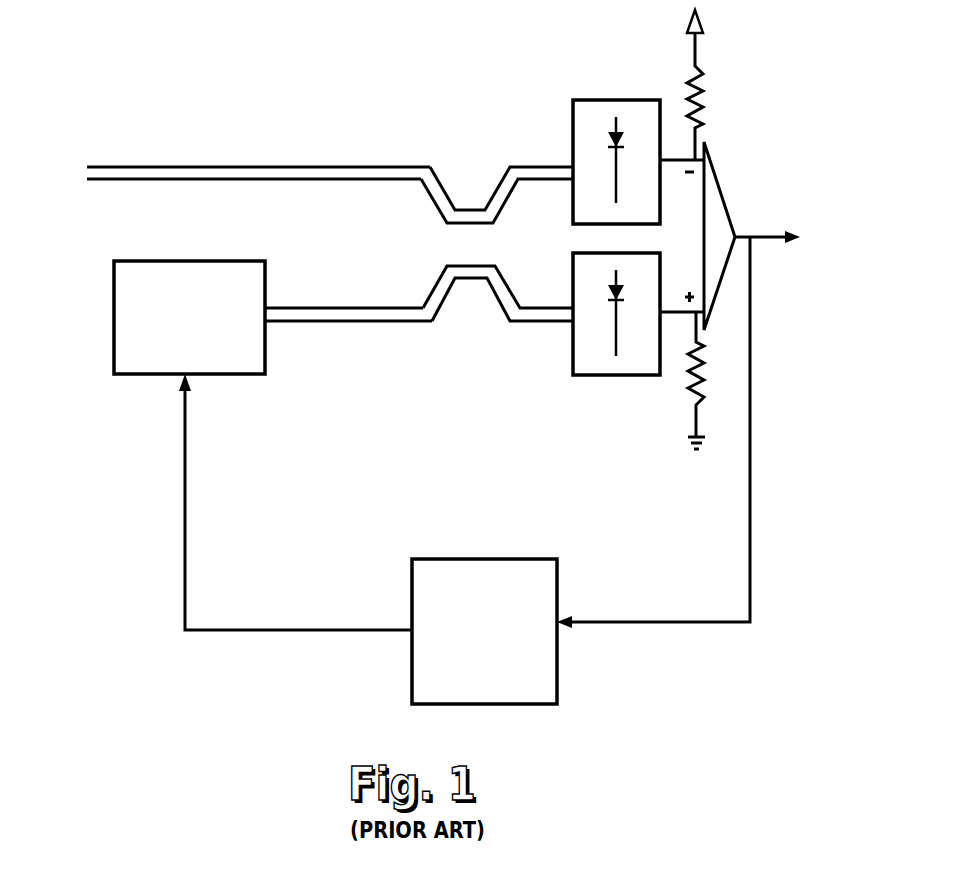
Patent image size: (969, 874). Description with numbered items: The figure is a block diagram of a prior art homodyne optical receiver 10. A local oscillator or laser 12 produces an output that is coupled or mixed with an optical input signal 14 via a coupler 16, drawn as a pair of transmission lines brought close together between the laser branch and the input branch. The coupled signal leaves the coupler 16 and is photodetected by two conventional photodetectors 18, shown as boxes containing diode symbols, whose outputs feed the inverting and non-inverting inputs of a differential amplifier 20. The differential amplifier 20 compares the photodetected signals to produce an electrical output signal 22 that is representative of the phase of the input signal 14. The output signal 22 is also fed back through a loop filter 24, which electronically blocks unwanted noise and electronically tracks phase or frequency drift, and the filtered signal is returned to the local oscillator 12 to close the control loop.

The prior art homodyne receiver 10 is at (212, 115).
The local oscillator or laser 12 is at (114, 298).
The optical input signal 14 is at (86, 172).
The coupler 16 is at (465, 180).
The photodetectors 18 is at (572, 195).
The differential amplifier 20 is at (723, 198).
The electrical output signal 22 is at (753, 243).
The loop filter 24 is at (483, 559).